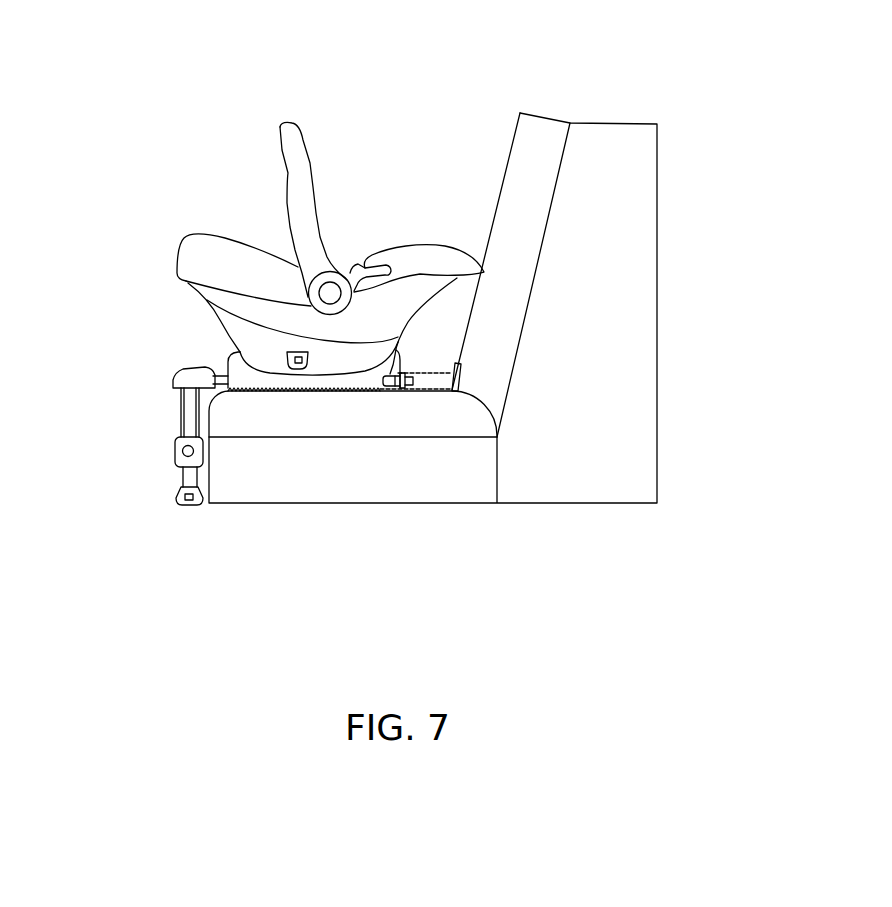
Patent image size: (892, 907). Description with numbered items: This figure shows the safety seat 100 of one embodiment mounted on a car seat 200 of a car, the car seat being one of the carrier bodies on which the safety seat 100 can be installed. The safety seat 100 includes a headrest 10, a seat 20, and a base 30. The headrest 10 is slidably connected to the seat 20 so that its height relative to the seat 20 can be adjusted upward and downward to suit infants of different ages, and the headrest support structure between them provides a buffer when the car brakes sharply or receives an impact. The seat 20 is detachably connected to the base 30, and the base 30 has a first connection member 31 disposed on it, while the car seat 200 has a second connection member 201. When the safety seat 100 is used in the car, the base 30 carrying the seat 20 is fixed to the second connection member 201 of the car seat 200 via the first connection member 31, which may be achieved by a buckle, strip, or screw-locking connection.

The car seat 200 is at (549, 113).
The second connection member 201 is at (438, 382).
The safety seat 100 is at (418, 236).
The headrest 10 is at (476, 265).
The seat 20 is at (237, 347).
The base 30 is at (267, 378).
The first connection member 31 is at (390, 378).